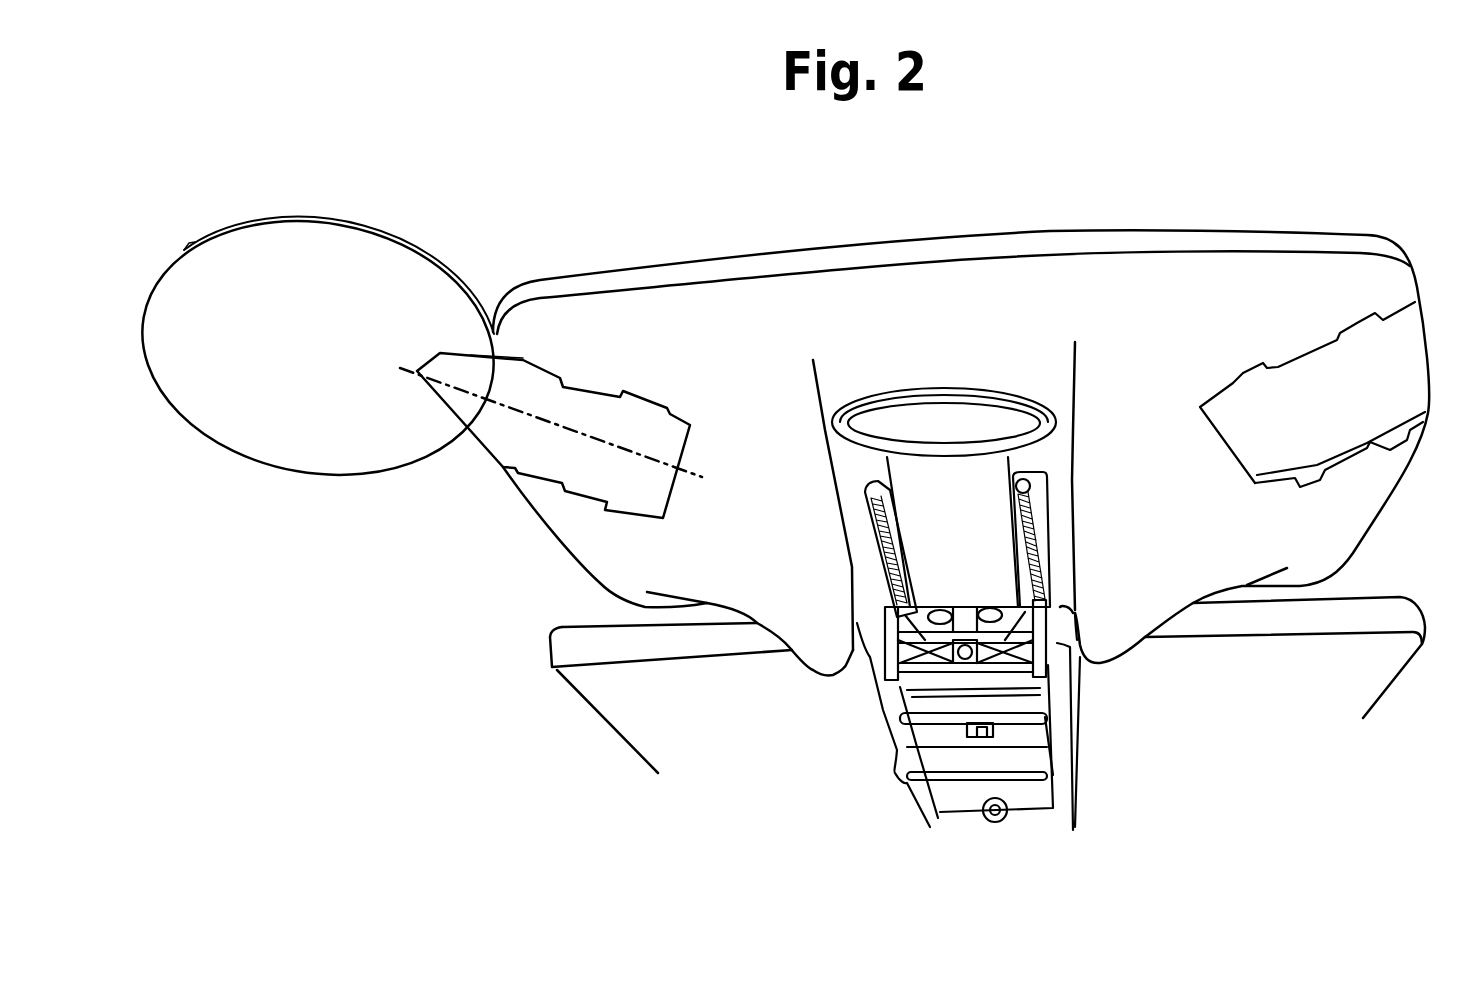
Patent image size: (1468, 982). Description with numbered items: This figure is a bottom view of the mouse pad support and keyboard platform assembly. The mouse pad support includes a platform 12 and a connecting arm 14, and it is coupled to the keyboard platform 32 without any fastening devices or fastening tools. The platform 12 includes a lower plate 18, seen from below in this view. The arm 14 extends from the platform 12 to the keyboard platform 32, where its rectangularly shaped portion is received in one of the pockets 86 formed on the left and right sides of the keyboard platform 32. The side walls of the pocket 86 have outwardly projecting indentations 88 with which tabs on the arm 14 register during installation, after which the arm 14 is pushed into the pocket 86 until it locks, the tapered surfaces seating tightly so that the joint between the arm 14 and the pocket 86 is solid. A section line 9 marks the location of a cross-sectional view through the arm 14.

The section line 9- 9 is at (417, 370).
The platform 12 is at (360, 233).
The connecting arm 14 is at (634, 487).
The lower plate 18 is at (363, 473).
The keyboard platform 32 is at (1240, 232).
The pocket 86 is at (1318, 404).
The indentation 88 is at (1253, 365).